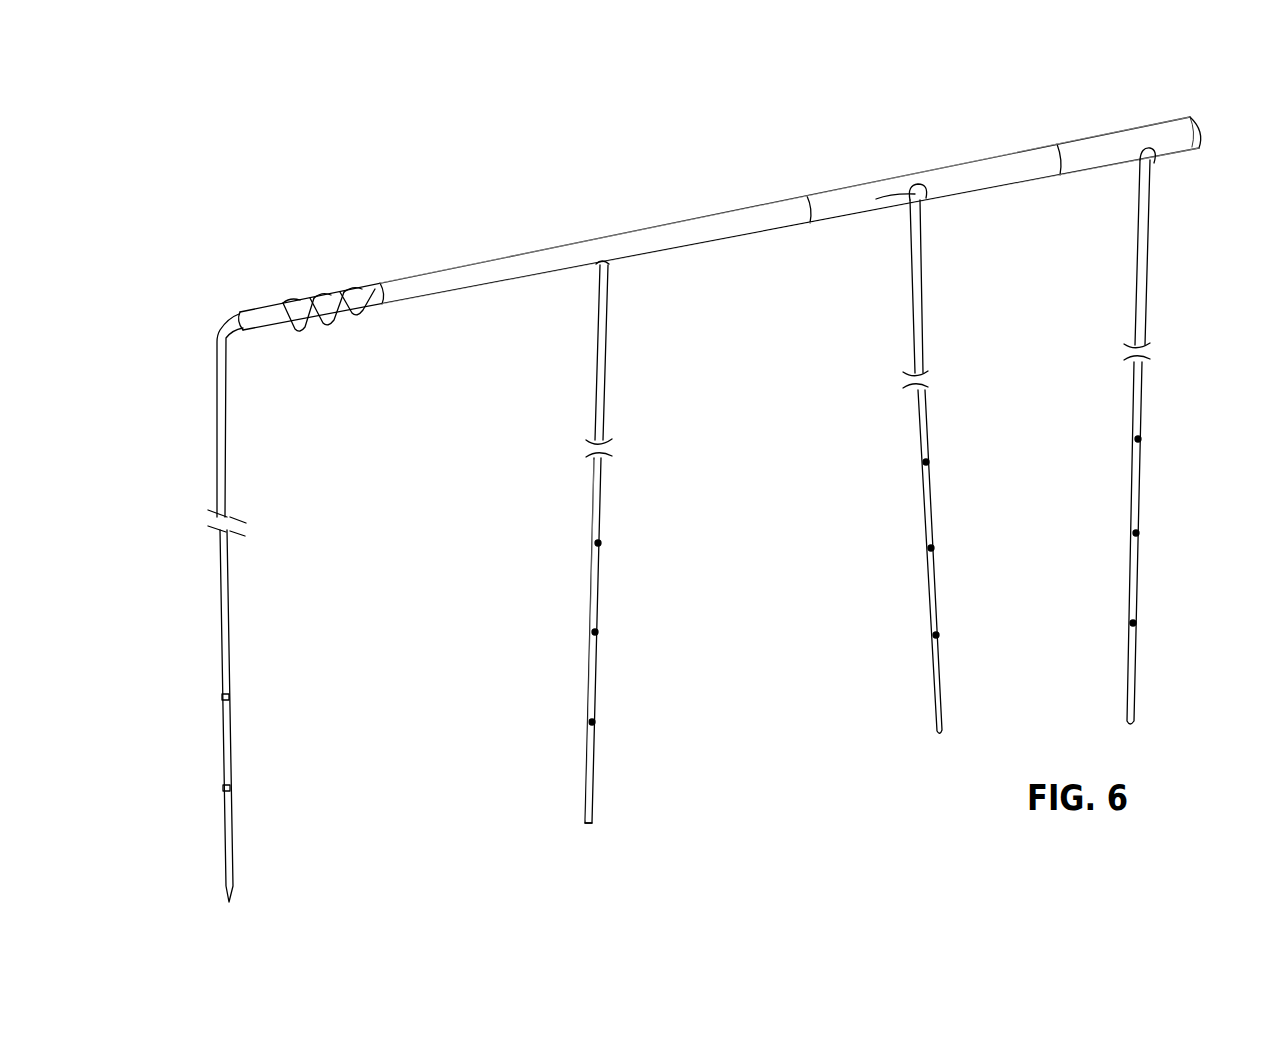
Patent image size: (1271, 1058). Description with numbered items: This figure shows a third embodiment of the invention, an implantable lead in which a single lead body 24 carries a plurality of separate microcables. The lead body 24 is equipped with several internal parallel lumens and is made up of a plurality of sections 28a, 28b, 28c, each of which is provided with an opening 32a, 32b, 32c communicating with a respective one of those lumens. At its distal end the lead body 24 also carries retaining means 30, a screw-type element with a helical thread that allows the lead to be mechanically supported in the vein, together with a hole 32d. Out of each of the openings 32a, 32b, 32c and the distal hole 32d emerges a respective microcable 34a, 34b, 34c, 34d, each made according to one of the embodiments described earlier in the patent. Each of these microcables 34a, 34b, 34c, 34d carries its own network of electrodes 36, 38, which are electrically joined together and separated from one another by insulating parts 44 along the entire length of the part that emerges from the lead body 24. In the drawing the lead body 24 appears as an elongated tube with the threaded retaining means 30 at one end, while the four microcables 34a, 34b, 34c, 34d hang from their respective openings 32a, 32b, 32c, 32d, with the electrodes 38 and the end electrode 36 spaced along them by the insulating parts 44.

The lead body 24 is at (330, 193).
The lead body section 28a is at (1115, 150).
The lead body section 28b is at (946, 180).
The lead body section 28c is at (707, 232).
The retaining means 30 is at (343, 318).
The opening 32a is at (1158, 160).
The opening 32b is at (900, 200).
The opening 32c is at (597, 271).
The hole 32d is at (237, 318).
The microcable 34a is at (1140, 425).
The microcable 34b is at (930, 440).
The microcable 34c is at (600, 522).
The microcable 34d is at (228, 622).
The electrode 36 is at (588, 825).
The electrode 38 is at (593, 543).
The insulating part 44 is at (602, 392).